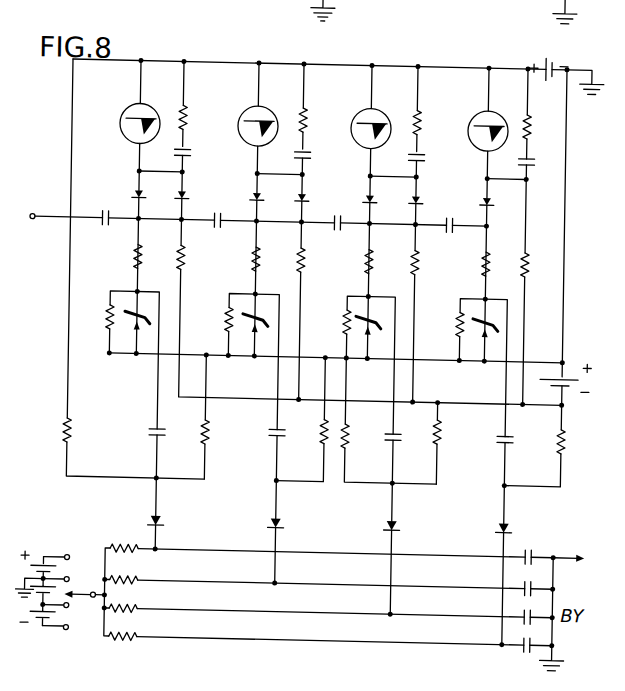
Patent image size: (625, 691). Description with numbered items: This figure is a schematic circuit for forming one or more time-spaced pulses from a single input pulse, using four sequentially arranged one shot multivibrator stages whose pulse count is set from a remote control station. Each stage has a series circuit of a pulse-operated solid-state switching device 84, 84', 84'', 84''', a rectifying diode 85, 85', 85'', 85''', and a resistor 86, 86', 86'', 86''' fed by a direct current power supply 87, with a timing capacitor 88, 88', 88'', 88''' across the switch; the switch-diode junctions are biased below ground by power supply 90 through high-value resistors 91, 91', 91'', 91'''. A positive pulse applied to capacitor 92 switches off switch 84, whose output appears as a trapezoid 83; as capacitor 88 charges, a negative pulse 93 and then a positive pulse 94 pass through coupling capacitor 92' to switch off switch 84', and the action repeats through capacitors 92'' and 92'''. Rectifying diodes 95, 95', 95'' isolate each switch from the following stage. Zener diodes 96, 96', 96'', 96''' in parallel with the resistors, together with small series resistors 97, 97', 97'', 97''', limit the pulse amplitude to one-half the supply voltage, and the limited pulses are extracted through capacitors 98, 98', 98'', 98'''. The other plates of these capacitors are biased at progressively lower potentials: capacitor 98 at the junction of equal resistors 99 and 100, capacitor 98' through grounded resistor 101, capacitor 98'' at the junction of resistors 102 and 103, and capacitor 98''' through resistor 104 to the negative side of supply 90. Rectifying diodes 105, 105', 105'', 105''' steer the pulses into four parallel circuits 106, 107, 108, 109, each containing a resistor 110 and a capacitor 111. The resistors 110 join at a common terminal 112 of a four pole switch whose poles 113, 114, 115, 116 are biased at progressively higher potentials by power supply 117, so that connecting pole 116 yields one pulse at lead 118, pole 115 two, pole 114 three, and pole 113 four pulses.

The trapezoid 83 is at (214, 203).
The pulse-operated solid-state switching device 84 is at (147, 113).
The switching device 84' is at (250, 113).
The switching device 84'' is at (364, 117).
The switching device 84''' is at (481, 120).
The rectifying diode 85 is at (127, 190).
The rectifying diode 85' is at (245, 192).
The rectifying diode 85'' is at (358, 193).
The rectifying diode 85''' is at (472, 195).
The resistor 86 is at (96, 314).
The resistor 86' is at (212, 316).
The resistor 86'' is at (329, 318).
The resistor 86''' is at (441, 321).
The direct current power supply 87 is at (546, 52).
The capacitor 88 is at (196, 140).
The capacitor 88' is at (320, 143).
The capacitor 88'' is at (437, 146).
The capacitor 88''' is at (564, 152).
The power supply 90 is at (574, 380).
The resistor 91 is at (169, 262).
The resistor 91' is at (286, 265).
The resistor 91'' is at (399, 272).
The resistor 91''' is at (509, 274).
The capacitor 92 is at (97, 230).
The capacitor 92' is at (206, 230).
The capacitor 92'' is at (324, 231).
The capacitor 92''' is at (457, 241).
The negative pulse 93 is at (224, 250).
The positive pulse 94 is at (224, 236).
The rectifying diode 95 is at (171, 191).
The rectifying diode 95' is at (292, 192).
The rectifying diode 95'' is at (405, 193).
The zener diode 96 is at (135, 346).
The zener diode 96' is at (253, 348).
The zener diode 96'' is at (373, 351).
The zener diode 96''' is at (474, 353).
The resistor 97 is at (121, 261).
The resistor 97' is at (243, 264).
The resistor 97'' is at (339, 266).
The resistor 97''' is at (467, 274).
The capacitor 98 is at (170, 441).
The capacitor 98' is at (292, 444).
The capacitor 98'' is at (380, 452).
The capacitor 98''' is at (524, 454).
The resistor 99 is at (78, 430).
The resistor 100 is at (215, 430).
The resistor 101 is at (326, 424).
The resistor 102 is at (355, 432).
The resistor 103 is at (436, 438).
The resistor 104 is at (574, 436).
The rectifying diode 105 is at (176, 511).
The rectifying diode 105' is at (297, 511).
The rectifying diode 105'' is at (418, 516).
The rectifying diode 105''' is at (532, 519).
The parallel circuit 106 is at (219, 548).
The parallel circuit 107 is at (222, 578).
The parallel circuit 108 is at (223, 607).
The parallel circuit 109 is at (231, 635).
The resistor 110 is at (143, 556).
The capacitor 111 is at (522, 574).
The common terminal 112 is at (108, 591).
The pole 113 is at (78, 630).
The pole 114 is at (77, 608).
The pole 115 is at (82, 571).
The pole 116 is at (77, 555).
The power supply 117 is at (46, 556).
The lead 118 is at (572, 550).